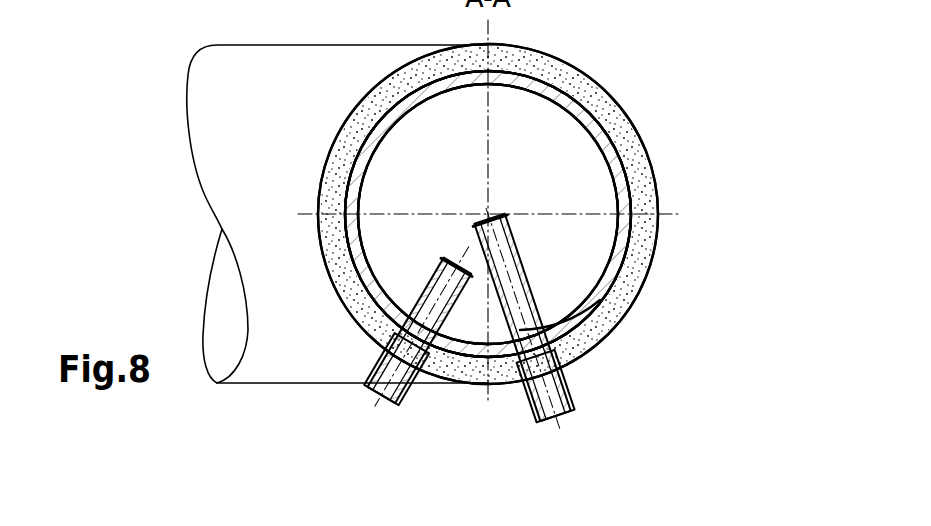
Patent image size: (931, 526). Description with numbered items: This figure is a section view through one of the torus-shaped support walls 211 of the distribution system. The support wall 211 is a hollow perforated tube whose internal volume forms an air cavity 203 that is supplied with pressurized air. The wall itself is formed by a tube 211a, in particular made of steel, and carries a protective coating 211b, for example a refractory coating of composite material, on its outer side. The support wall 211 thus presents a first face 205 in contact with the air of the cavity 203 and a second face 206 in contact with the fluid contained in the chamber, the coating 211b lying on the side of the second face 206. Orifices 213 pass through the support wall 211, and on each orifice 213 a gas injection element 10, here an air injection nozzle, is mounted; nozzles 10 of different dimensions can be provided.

The gas injection element 10 is at (620, 418).
The air cavity 203 is at (513, 115).
The first face 205 is at (596, 140).
The second face 206 is at (596, 84).
The support wall 211 is at (96, 131).
The tube 211a is at (357, 180).
The protective coating 211b is at (343, 145).
The orifice 213 is at (550, 313).